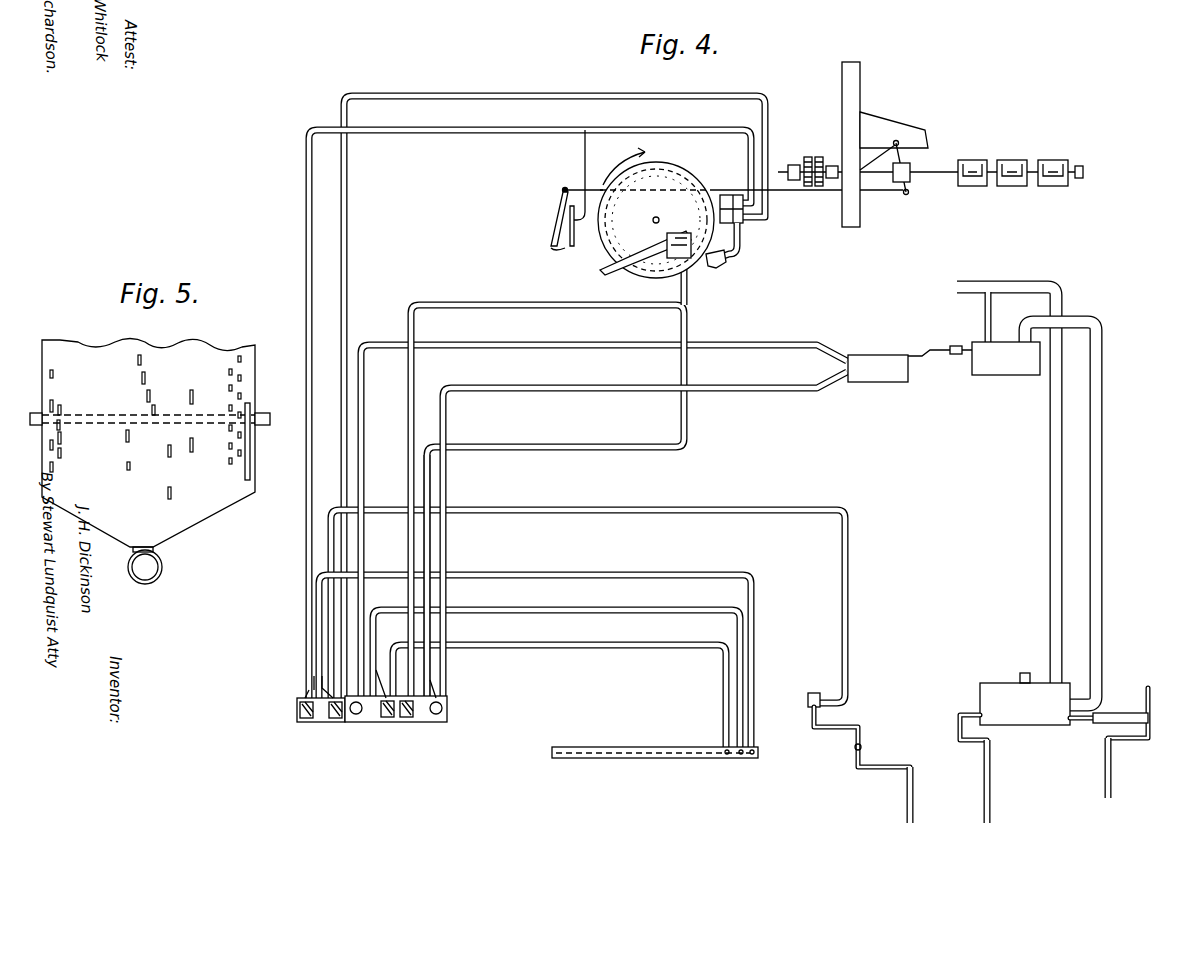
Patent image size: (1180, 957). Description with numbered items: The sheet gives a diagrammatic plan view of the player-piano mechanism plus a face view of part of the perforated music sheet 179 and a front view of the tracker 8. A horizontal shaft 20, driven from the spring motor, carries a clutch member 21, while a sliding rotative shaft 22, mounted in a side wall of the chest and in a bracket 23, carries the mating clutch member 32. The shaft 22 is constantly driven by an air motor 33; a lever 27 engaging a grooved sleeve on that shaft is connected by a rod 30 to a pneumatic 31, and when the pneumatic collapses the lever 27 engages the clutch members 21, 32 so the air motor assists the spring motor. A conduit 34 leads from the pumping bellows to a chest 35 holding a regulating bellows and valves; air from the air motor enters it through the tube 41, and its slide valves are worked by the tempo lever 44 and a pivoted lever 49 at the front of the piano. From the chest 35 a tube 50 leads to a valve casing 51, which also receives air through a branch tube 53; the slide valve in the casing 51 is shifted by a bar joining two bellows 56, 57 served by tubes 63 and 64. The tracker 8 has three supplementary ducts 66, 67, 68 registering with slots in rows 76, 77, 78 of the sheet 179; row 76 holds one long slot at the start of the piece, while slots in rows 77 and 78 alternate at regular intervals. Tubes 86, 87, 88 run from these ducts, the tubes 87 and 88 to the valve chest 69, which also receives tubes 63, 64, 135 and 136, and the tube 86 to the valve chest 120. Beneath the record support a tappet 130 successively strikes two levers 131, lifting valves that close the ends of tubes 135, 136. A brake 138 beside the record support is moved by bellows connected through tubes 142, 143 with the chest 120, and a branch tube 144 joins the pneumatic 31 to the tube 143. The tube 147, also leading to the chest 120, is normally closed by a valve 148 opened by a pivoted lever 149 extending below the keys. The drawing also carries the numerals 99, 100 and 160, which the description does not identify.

In FIG. 4, the tracker 8 is at (630, 747).
In FIG. 5, the tracker 8 is at (262, 413).
In FIG. 4, the horizontal shaft 20 is at (786, 168).
In FIG. 4, the clutch member 21 is at (807, 157).
In FIG. 4, the sliding rotative shaft 22 is at (940, 175).
In FIG. 4, the bracket 23 is at (890, 128).
In FIG. 4, the lever 27 is at (907, 195).
In FIG. 4, the rod 30 is at (800, 193).
In FIG. 4, the pneumatic 31 is at (560, 246).
In FIG. 4, the clutch member 32 is at (819, 157).
In FIG. 4, the air motor 33 is at (1012, 168).
In FIG. 4, the conduit 34 is at (1025, 673).
In FIG. 4, the chest 35 is at (1025, 704).
In FIG. 4, the tube 41 is at (1050, 510).
In FIG. 4, the tempo lever 44 is at (990, 776).
In FIG. 4, the pivoted lever 49 is at (1110, 771).
In FIG. 4, the tube 50 is at (1105, 480).
In FIG. 4, the valve casing 51 is at (1012, 362).
In FIG. 4, the branch tube 53 is at (985, 308).
In FIG. 4, the bellows 56 is at (856, 382).
In FIG. 4, the bellows 57 is at (906, 380).
In FIG. 4, the air duct 63 is at (622, 345).
In FIG. 4, the air duct 64 is at (610, 389).
In FIG. 4, the supplementary duct 66 is at (754, 756).
In FIG. 4, the supplementary duct 67 is at (742, 756).
In FIG. 4, the supplementary duct 68 is at (728, 756).
In FIG. 4, the valve chest 69 is at (448, 710).
In FIG. 5, the row 76 is at (250, 470).
In FIG. 5, the row 77 is at (243, 468).
In FIG. 5, the row 78 is at (230, 460).
In FIG. 4, the tube 86 is at (316, 576).
In FIG. 4, the tube 87 is at (374, 610).
In FIG. 4, the tube 88 is at (583, 645).
In FIG. 4, the port 99 is at (358, 722).
In FIG. 4, the port 100 is at (436, 722).
In FIG. 4, the valve chest 120 is at (320, 722).
In FIG. 4, the tappet 130 is at (656, 213).
In FIG. 4, the lever 131 is at (640, 250).
In FIG. 4, the tube 135 is at (512, 305).
In FIG. 4, the tube 136 is at (540, 447).
In FIG. 4, the brake 138 is at (718, 266).
In FIG. 4, the tube 142 is at (555, 90).
In FIG. 4, the tube 143 is at (508, 132).
In FIG. 4, the branch tube 144 is at (585, 160).
In FIG. 4, the tube 147 is at (800, 508).
In FIG. 4, the valve 148 is at (820, 693).
In FIG. 4, the pivoted lever 149 is at (905, 797).
In FIG. 4, the valve fitting 160 is at (700, 186).
In FIG. 5, the perforated music sheet 179 is at (148, 462).